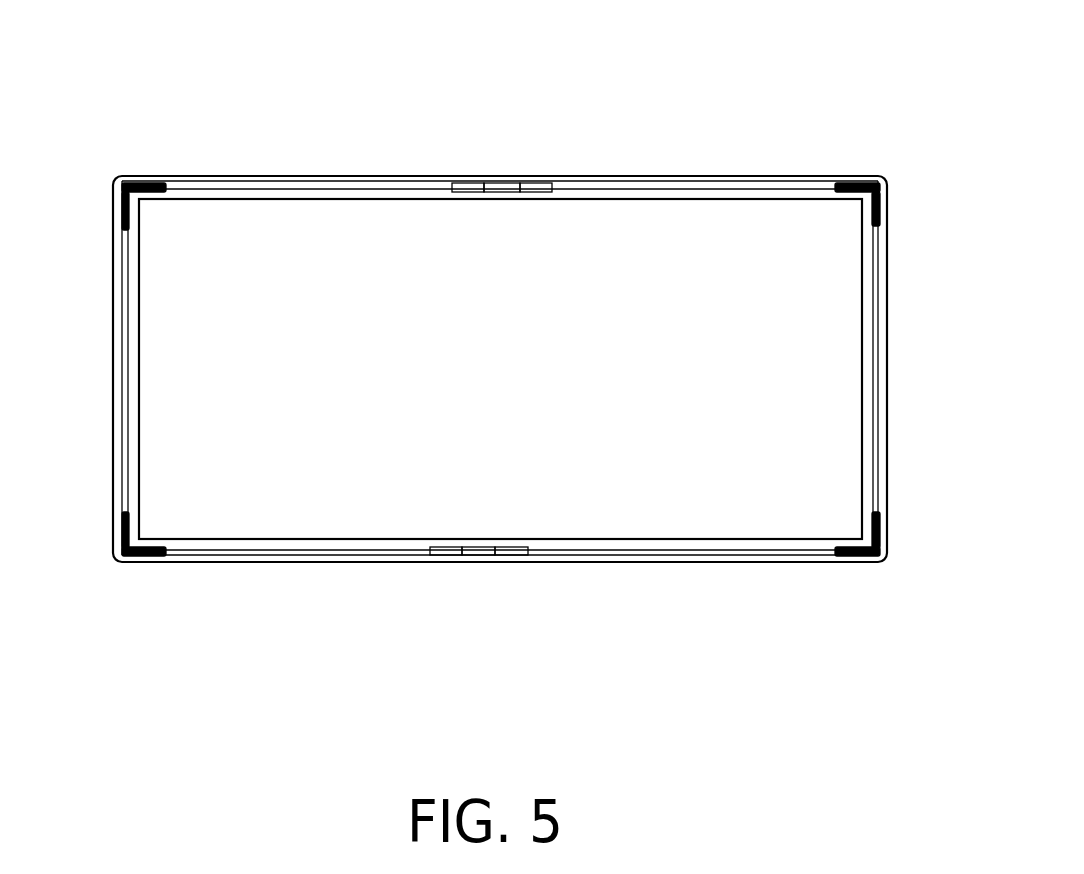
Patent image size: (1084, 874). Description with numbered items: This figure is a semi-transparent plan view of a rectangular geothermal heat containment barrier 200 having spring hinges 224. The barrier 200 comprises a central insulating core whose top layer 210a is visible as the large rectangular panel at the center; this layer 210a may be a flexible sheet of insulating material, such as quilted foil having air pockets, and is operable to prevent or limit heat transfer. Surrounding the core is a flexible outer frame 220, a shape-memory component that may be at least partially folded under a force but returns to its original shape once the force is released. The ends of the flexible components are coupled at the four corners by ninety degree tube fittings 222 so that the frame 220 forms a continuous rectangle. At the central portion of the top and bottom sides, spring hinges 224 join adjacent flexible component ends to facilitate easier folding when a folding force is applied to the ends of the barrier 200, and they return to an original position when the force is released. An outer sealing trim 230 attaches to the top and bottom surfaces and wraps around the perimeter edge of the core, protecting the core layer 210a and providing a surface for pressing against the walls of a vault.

The geothermal heat containment barrier 200 is at (138, 82).
The central insulating core layer 210a is at (525, 380).
The flexible outer frame 220 is at (278, 186).
The ninety degree tube fittings 222 is at (122, 190).
The spring hinges 224 is at (500, 187).
The outer sealing trim 230 is at (662, 180).